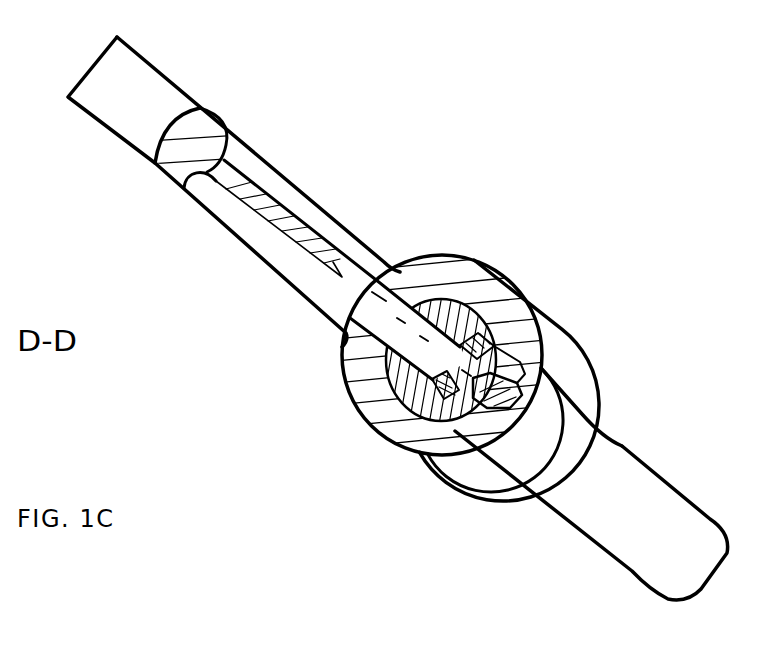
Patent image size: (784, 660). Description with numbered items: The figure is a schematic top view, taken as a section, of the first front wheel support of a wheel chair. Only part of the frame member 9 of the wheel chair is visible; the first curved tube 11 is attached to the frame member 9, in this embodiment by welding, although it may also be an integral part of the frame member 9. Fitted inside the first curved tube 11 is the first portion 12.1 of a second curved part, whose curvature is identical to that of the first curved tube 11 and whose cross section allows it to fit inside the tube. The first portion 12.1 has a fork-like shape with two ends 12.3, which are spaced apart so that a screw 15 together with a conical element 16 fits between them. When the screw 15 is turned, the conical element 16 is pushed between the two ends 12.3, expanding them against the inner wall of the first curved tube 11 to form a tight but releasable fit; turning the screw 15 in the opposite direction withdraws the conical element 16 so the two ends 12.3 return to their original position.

The frame member 9 is at (105, 77).
The first curved tube 11 is at (577, 341).
The first portion 12.1 is at (617, 541).
The two ends 12.3 is at (478, 300).
The screw 15 is at (424, 300).
The conical element 16 is at (439, 402).